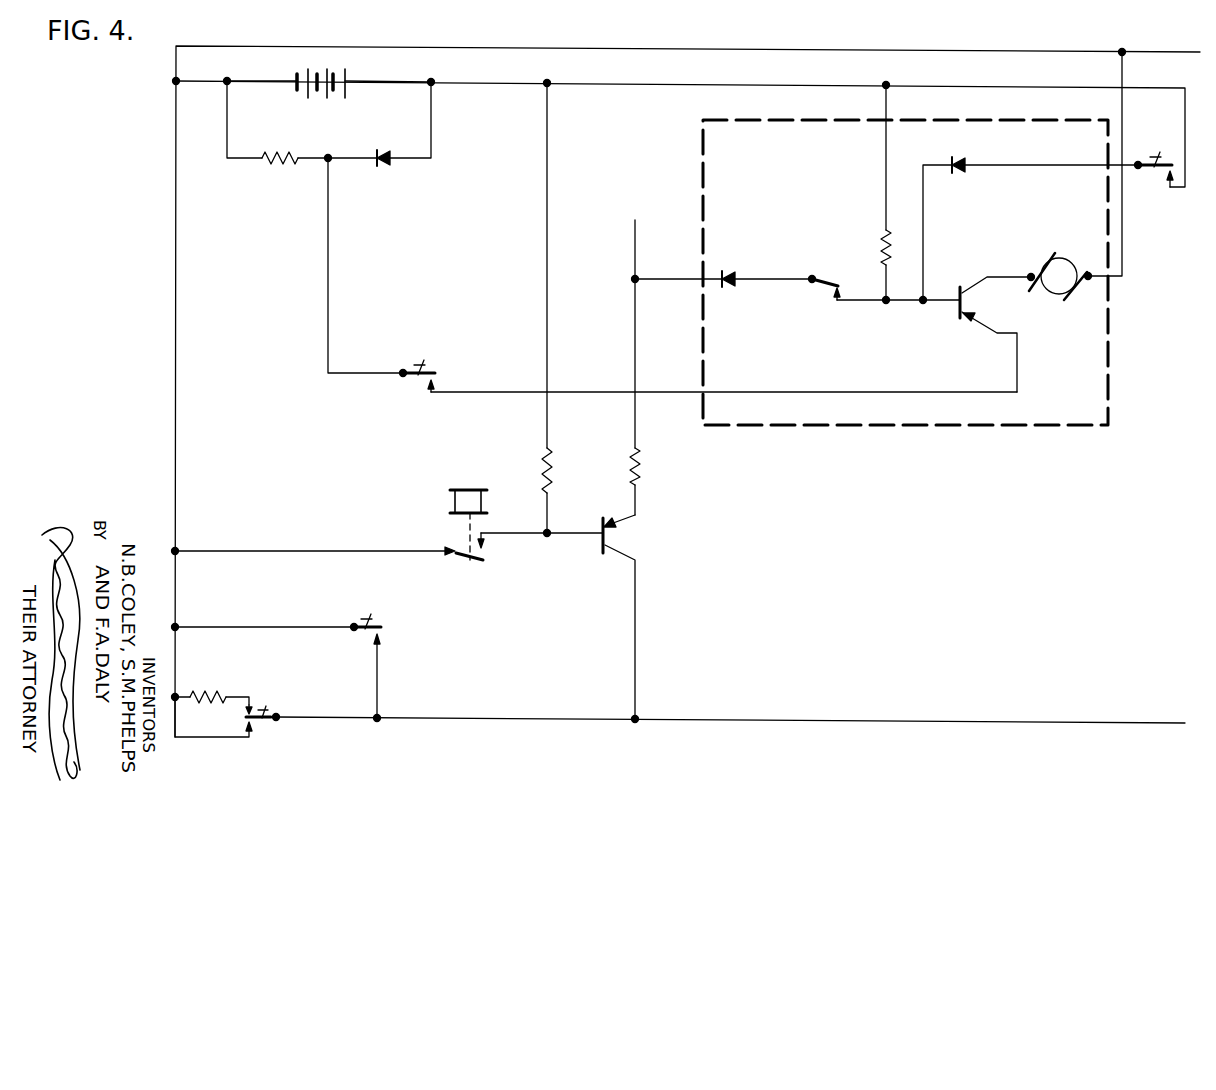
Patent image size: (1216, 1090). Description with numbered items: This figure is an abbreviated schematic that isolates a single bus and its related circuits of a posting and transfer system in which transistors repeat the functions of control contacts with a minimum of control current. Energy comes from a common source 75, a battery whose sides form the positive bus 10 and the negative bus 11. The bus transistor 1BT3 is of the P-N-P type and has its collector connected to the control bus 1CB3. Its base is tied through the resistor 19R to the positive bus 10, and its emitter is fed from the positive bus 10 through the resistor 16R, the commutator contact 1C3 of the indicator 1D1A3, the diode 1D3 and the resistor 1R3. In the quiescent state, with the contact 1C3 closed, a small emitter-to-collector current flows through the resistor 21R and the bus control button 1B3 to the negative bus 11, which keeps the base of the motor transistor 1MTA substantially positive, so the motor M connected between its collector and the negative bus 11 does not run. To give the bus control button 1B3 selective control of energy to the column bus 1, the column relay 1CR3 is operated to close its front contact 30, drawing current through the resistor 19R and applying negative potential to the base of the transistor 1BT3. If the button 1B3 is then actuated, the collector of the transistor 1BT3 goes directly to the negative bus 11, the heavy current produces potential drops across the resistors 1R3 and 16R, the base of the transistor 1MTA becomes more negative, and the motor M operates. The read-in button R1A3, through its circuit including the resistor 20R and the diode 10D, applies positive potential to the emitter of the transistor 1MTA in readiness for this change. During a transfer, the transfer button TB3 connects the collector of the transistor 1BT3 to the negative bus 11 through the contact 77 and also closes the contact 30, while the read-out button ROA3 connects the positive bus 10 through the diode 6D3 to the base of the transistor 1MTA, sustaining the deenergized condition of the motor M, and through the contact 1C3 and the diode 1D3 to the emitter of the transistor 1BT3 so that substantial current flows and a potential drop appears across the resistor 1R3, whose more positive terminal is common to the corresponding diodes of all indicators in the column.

The negative bus 11 is at (604, 47).
The positive bus 10 is at (597, 83).
The common source 75 is at (347, 90).
The resistor 20R is at (294, 162).
The diode 10D is at (391, 162).
The read-in button R1A3 is at (672, 275).
The resistor 19R is at (560, 454).
The column relay 1CR3 is at (471, 496).
The front contact 30 is at (388, 557).
The bus transistor 1BT3 is at (601, 530).
The resistor 1R3 is at (644, 465).
The column bus 1 is at (634, 246).
The diode 1D3 is at (724, 276).
The commutator contact 1C3 is at (834, 280).
The resistor 16R is at (883, 244).
The diode 6D3 is at (955, 163).
The read-out button ROA3 is at (1154, 159).
The motor transistor 1MTA is at (965, 266).
The indicator 1D1A3 is at (887, 427).
The transfer button TB3 is at (277, 658).
The contact 77 is at (364, 633).
The resistor 21R is at (215, 695).
The bus control button 1B3 is at (263, 708).
The control bus 1CB3 is at (1135, 712).